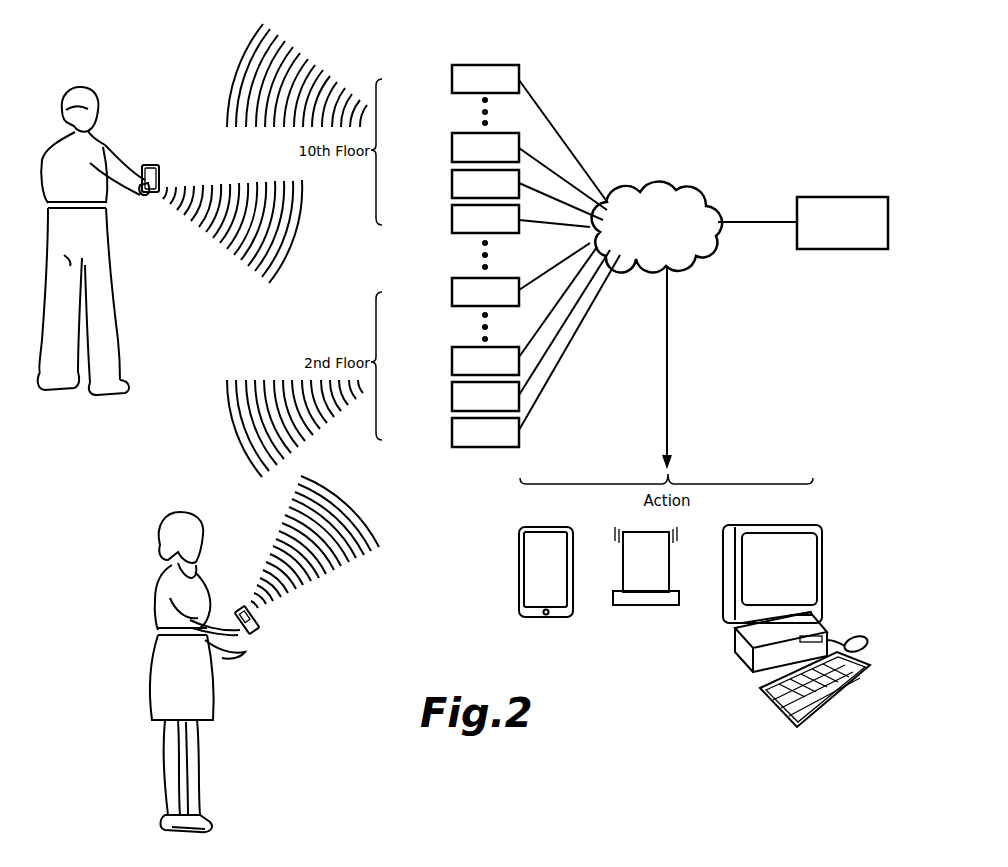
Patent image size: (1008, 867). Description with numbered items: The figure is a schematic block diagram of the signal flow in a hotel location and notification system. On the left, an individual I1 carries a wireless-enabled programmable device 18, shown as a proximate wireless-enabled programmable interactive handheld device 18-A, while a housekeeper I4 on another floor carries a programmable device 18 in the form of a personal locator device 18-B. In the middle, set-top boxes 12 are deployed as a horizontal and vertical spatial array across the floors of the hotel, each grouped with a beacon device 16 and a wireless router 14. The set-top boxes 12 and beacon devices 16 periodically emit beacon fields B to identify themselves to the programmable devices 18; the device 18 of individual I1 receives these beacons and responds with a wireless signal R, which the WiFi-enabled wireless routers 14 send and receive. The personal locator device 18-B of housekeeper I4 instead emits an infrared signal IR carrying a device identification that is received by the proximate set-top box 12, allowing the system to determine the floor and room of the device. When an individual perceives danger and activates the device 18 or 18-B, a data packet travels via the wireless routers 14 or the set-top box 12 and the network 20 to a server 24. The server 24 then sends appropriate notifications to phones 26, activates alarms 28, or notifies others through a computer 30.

The set-top box 12 is at (452, 86).
The wireless router 14 is at (452, 218).
The beacon device 16 is at (452, 183).
The wireless-enabled programmable device 18 is at (135, 85).
The proximate wireless-enabled programmable interactive handheld device 18-A is at (152, 165).
The personal locator device 18-B is at (246, 606).
The network 20 is at (688, 190).
The server 24 is at (838, 197).
The phone 26 is at (519, 565).
The alarm 28 is at (643, 605).
The computer 30 is at (822, 560).
The beacon field B is at (228, 78).
The wireless signal R is at (300, 212).
The infrared signal IR is at (362, 515).
The individual I1 is at (113, 288).
The housekeeper I4 is at (199, 757).